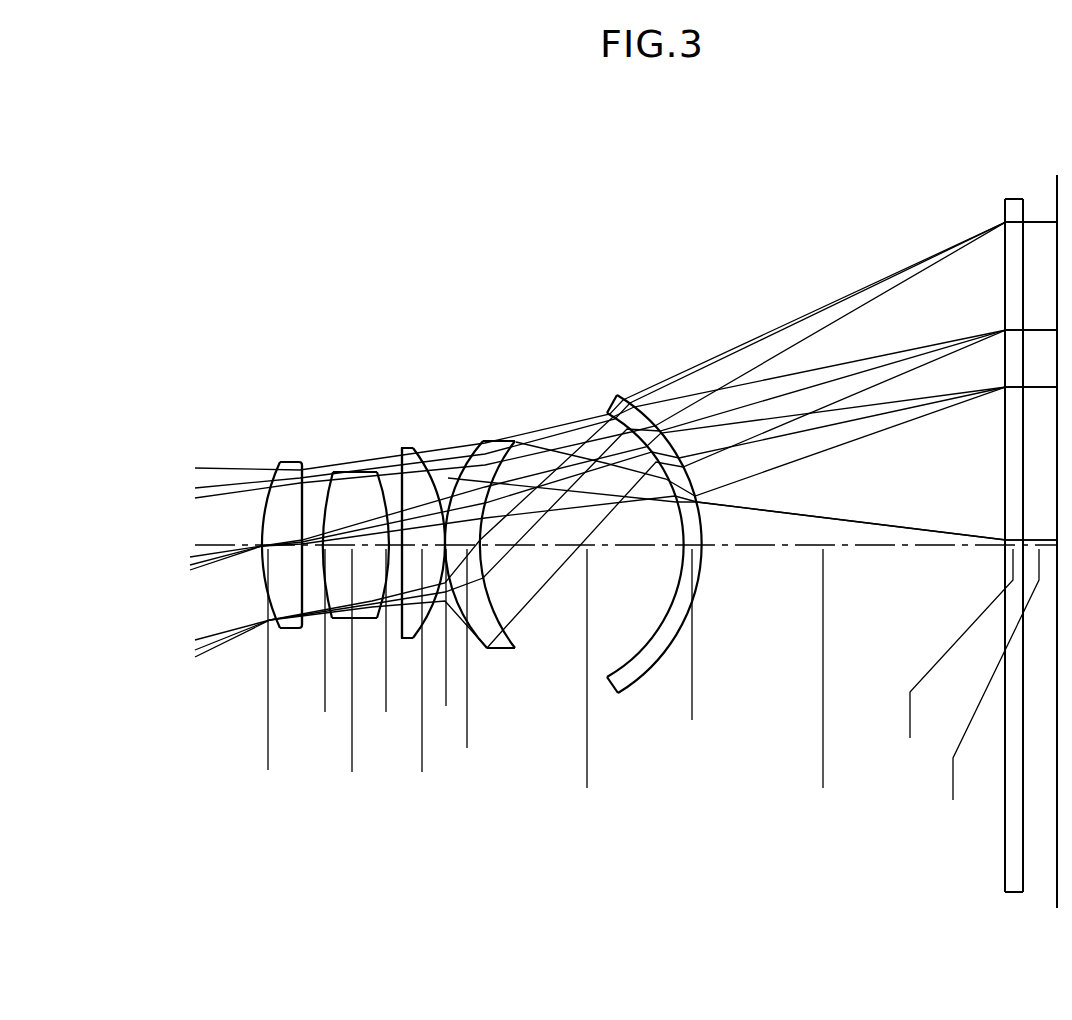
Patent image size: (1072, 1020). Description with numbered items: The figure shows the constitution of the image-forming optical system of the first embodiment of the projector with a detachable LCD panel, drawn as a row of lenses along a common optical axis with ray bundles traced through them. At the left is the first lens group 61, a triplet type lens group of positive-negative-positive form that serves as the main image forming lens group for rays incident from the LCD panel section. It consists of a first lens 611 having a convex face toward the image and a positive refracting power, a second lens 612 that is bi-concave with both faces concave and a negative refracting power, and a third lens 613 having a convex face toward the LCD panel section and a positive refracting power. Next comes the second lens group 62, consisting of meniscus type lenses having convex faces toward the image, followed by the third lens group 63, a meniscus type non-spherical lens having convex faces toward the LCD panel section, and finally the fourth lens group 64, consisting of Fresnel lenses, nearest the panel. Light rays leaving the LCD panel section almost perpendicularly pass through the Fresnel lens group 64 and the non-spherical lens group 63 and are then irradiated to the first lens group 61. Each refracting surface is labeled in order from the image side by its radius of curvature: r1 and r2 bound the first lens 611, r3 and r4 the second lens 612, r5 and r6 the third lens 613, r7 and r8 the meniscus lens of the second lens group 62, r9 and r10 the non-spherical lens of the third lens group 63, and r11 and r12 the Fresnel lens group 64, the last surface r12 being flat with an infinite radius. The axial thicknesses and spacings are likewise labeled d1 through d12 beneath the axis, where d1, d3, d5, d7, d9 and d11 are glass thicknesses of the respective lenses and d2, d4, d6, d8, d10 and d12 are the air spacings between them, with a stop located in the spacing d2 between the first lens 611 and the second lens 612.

The first lens group 61 is at (443, 256).
The first lens 611 is at (320, 381).
The second lens 612 is at (395, 311).
The third lens 613 is at (450, 371).
The second lens group 62 is at (545, 191).
The third lens group 63 is at (683, 187).
The fourth lens group 64 is at (1065, 129).
The radius of curvature of first surface r1 is at (260, 503).
The radius of curvature of second surface r2 is at (304, 501).
The radius of curvature of third surface r3 is at (331, 462).
The radius of curvature of fourth surface r4 is at (377, 462).
The radius of curvature of fifth surface r5 is at (401, 503).
The radius of curvature of sixth surface r6 is at (432, 503).
The radius of curvature of seventh surface r7 is at (466, 422).
The radius of curvature of eighth surface r8 is at (507, 422).
The radius of curvature of ninth surface r9 is at (636, 434).
The radius of curvature of tenth surface r10 is at (659, 442).
The radius of curvature of eleventh surface r11 is at (988, 510).
The radius of curvature of twelfth surface r12 is at (1045, 510).
The thickness at first surface d1 is at (264, 672).
The thickness at second surface d2 is at (322, 643).
The thickness at third surface d3 is at (351, 673).
The thickness at fourth surface d4 is at (384, 643).
The thickness at fifth surface d5 is at (421, 673).
The thickness at sixth surface d6 is at (445, 640).
The thickness at seventh surface d7 is at (461, 661).
The thickness at eighth surface d8 is at (589, 681).
The thickness at ninth surface d9 is at (689, 647).
The thickness at tenth surface d10 is at (825, 681).
The thickness at eleventh surface d11 is at (950, 658).
The thickness at twelfth surface d12 is at (987, 690).